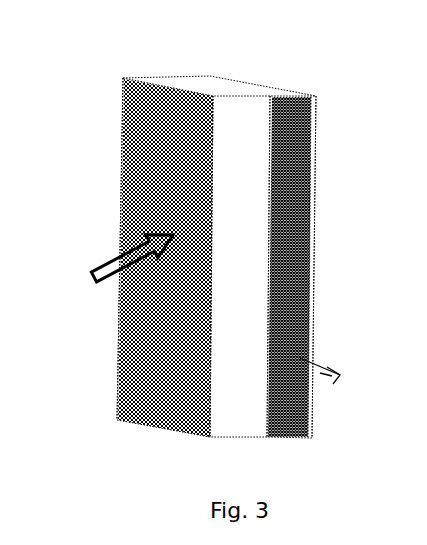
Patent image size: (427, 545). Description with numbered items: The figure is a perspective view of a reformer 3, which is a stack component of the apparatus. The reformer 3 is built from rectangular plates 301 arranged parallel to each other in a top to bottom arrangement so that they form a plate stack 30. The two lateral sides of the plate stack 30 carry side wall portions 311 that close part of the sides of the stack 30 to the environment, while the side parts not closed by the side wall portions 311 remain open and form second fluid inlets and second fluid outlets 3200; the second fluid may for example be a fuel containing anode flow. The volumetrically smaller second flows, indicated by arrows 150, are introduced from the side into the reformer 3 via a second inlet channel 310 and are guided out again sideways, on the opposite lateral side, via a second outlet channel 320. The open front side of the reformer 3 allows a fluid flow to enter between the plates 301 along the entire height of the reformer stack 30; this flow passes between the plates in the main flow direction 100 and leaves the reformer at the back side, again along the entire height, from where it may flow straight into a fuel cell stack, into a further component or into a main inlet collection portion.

The reformer 3 is at (150, 455).
The plate stack 30 is at (228, 86).
The second inlet channel 310 is at (127, 153).
The rectangular plate 301 is at (167, 290).
The side wall portion 311 is at (260, 305).
The second outlet channel 320 is at (317, 200).
The second fluid inlets and second fluid outlets 3200 is at (297, 140).
The main flow direction 100 is at (118, 252).
The second flows 150 is at (335, 382).